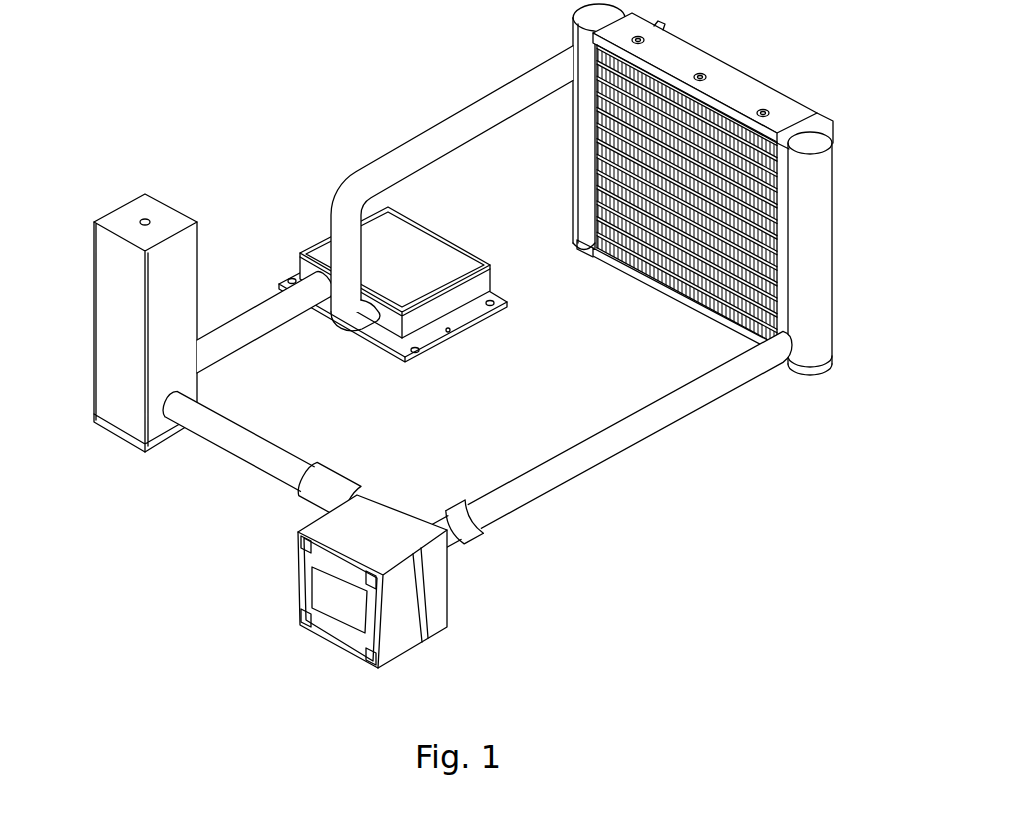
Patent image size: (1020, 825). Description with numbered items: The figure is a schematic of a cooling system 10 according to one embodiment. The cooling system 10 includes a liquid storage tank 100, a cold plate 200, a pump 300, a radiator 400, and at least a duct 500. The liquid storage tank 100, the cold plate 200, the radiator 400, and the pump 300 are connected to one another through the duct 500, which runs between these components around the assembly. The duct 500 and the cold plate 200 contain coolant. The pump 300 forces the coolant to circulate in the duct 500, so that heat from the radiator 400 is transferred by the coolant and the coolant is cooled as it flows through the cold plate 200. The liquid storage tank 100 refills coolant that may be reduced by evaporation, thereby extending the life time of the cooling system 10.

The cooling system 10 is at (85, 51).
The liquid storage tank 100 is at (82, 347).
The cold plate 200 is at (309, 241).
The pump 300 is at (472, 622).
The radiator 400 is at (844, 267).
The duct 500 is at (603, 447).